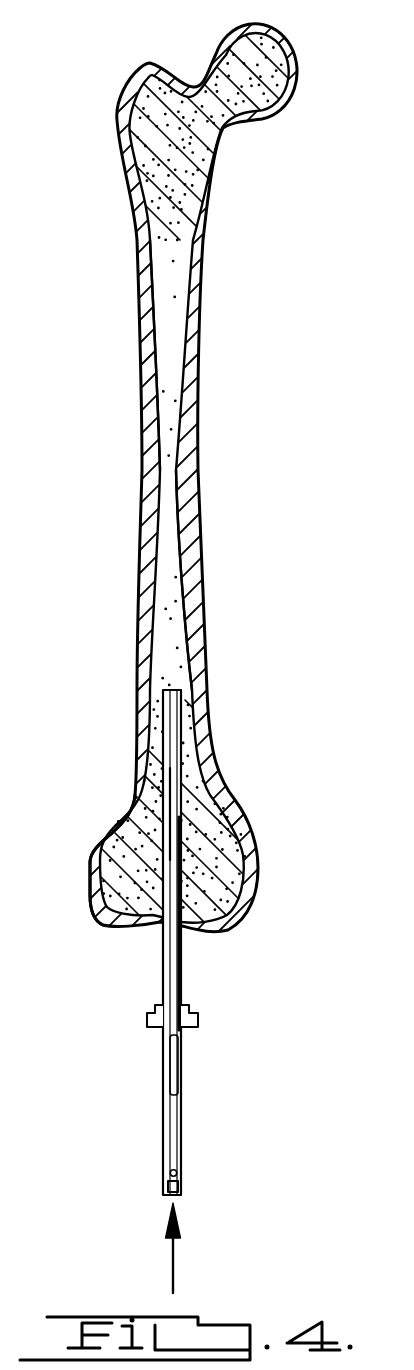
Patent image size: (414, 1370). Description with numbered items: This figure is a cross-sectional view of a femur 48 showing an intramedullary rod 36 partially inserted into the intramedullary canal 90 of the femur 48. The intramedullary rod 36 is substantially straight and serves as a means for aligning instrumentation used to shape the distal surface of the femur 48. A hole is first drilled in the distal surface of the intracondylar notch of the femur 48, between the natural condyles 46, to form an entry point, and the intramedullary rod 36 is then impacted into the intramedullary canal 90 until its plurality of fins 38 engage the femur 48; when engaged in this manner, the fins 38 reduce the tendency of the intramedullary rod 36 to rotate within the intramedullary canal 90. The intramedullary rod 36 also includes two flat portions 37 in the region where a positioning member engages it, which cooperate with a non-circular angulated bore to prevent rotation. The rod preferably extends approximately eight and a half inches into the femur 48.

The intramedullary canal 90 is at (167, 427).
The femur 48 is at (140, 672).
The natural condyles 46 is at (114, 920).
The intramedullary rod 36 is at (183, 961).
The fins 38 is at (151, 1018).
The flat portions 37 is at (172, 1148).